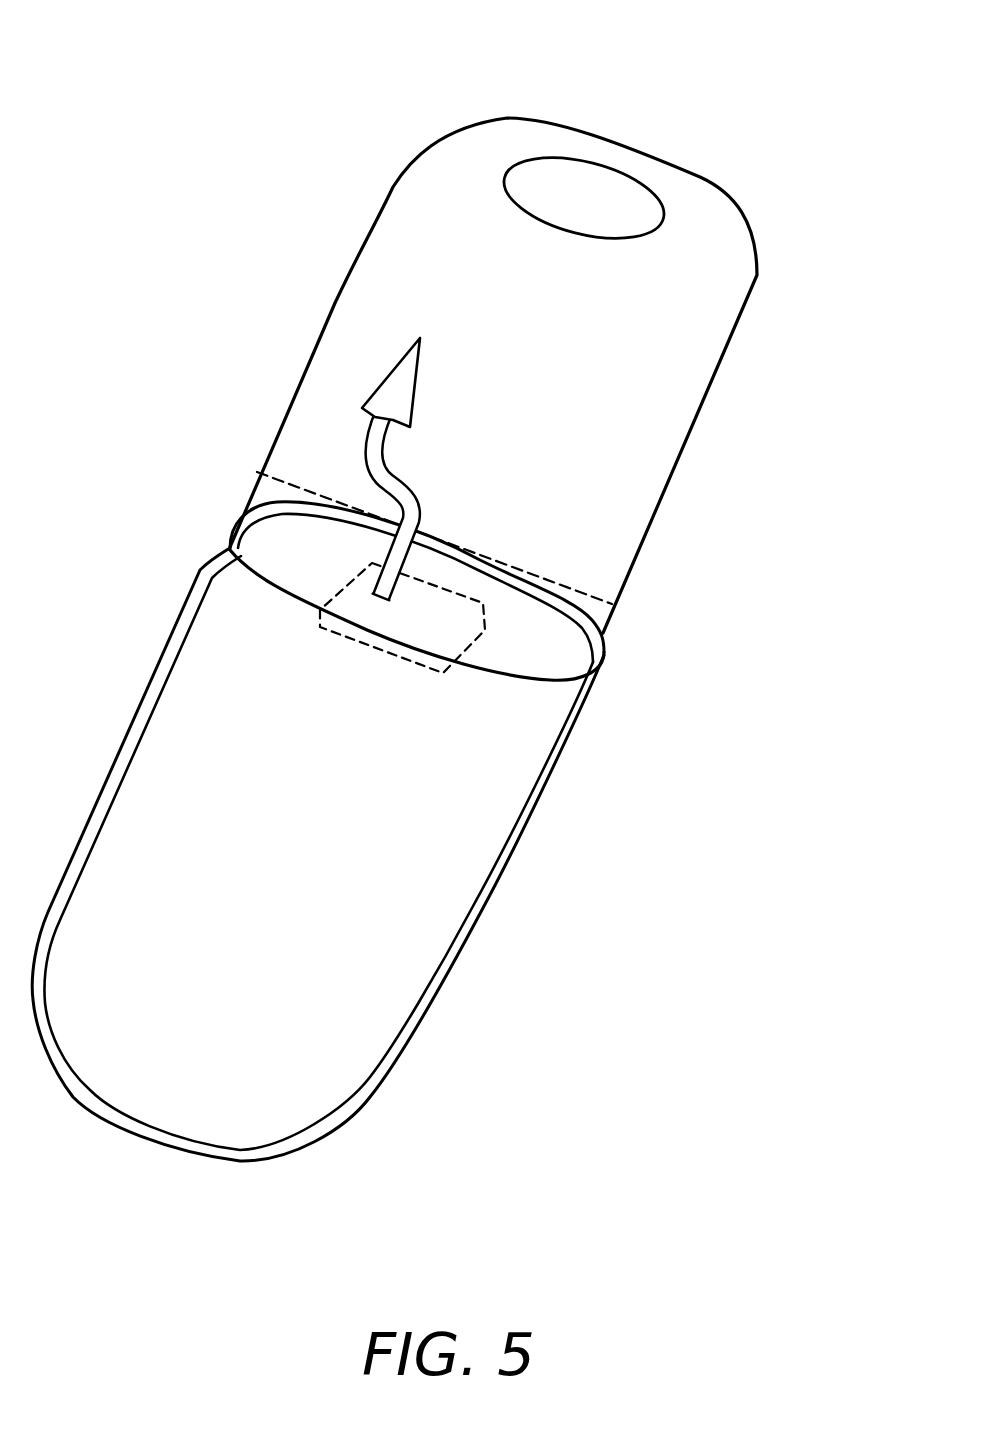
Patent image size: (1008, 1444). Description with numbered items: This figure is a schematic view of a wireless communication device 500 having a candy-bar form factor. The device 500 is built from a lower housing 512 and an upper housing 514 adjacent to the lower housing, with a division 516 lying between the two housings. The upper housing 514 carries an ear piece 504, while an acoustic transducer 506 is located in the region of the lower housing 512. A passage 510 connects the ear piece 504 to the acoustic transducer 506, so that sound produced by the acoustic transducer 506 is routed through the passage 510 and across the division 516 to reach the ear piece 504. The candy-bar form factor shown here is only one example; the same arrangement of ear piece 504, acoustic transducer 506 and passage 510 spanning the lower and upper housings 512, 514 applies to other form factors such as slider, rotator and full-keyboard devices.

The wireless communication device 500 is at (127, 36).
The ear piece 504 is at (590, 228).
The acoustic transducer 506 is at (383, 650).
The passage 510 is at (385, 446).
The lower housing 512 is at (391, 875).
The upper housing 514 is at (574, 386).
The division 516 is at (542, 569).